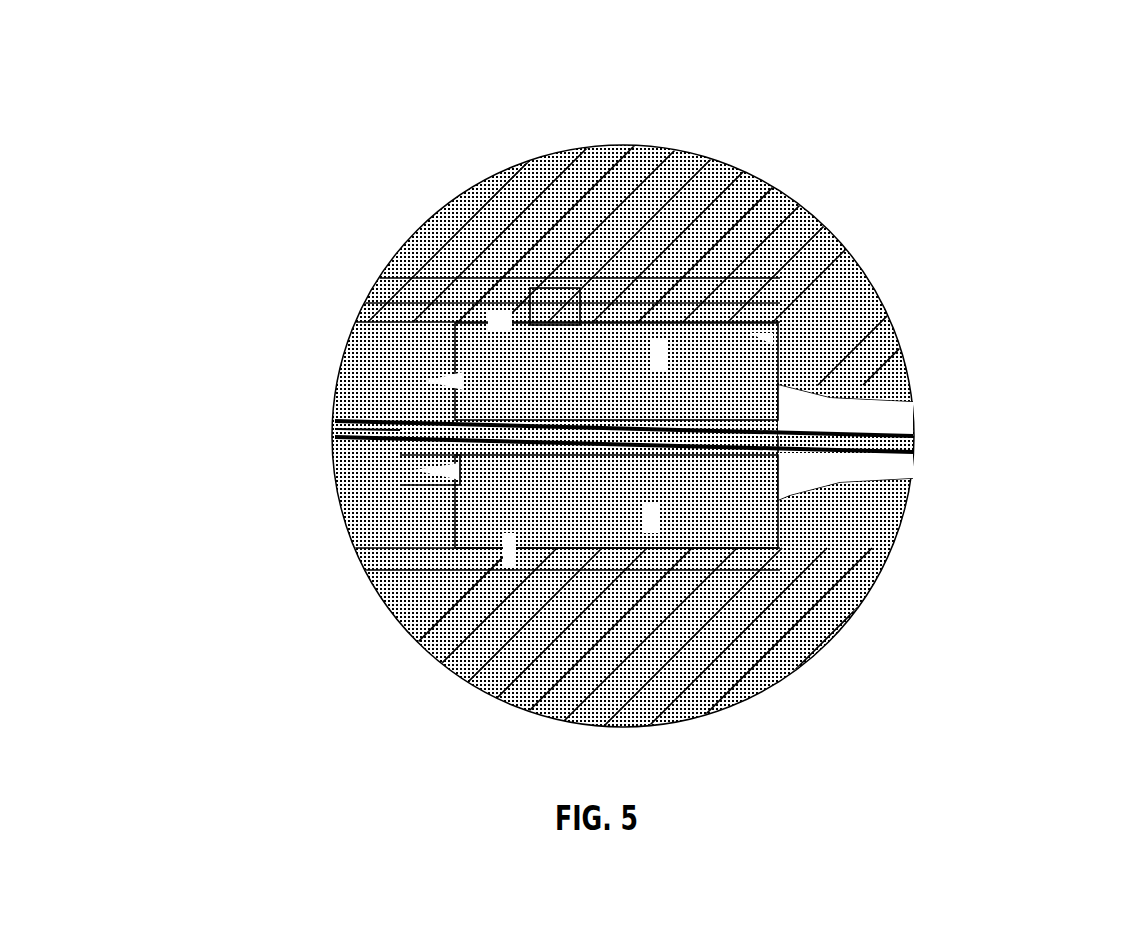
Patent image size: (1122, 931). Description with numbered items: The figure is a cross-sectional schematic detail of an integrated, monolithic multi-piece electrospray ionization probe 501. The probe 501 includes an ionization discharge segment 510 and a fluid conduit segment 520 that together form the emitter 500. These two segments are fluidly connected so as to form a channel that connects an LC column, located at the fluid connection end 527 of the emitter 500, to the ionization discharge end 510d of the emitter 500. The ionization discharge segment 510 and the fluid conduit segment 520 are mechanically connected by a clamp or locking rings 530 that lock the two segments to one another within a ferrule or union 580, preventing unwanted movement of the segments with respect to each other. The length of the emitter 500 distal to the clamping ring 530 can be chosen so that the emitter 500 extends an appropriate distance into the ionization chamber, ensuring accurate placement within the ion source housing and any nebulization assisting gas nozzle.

The multi-piece ESI probe 501 is at (841, 140).
The emitter 500 is at (615, 413).
The ionization discharge segment 510 is at (891, 472).
The ionization discharge end 510d is at (947, 439).
The fluid conduit segment 520 is at (377, 477).
The fluid connection end 527 is at (318, 428).
The locking ring 530 is at (742, 526).
The ferrule 580 is at (620, 336).